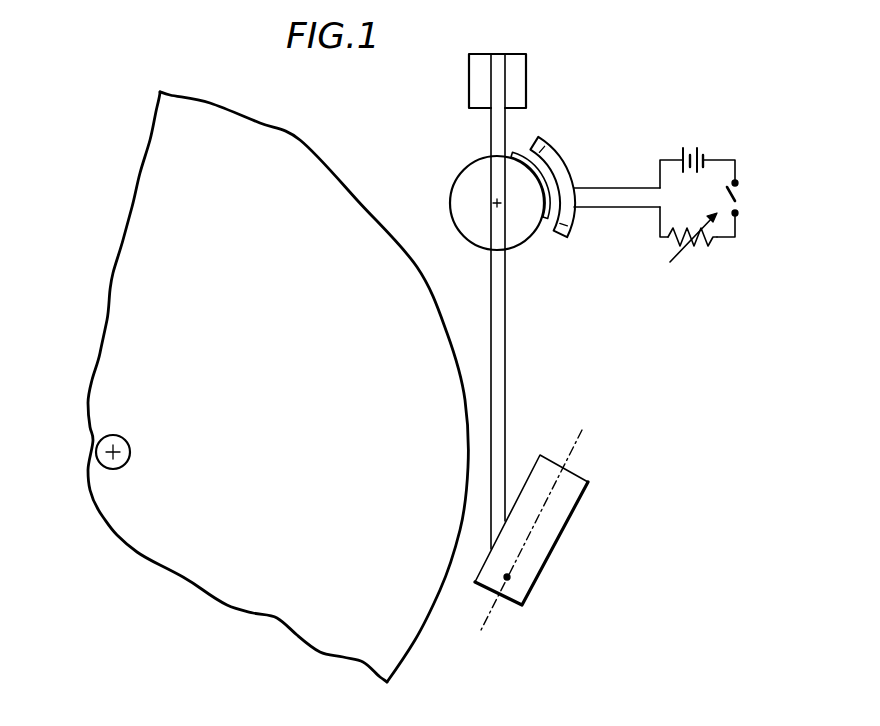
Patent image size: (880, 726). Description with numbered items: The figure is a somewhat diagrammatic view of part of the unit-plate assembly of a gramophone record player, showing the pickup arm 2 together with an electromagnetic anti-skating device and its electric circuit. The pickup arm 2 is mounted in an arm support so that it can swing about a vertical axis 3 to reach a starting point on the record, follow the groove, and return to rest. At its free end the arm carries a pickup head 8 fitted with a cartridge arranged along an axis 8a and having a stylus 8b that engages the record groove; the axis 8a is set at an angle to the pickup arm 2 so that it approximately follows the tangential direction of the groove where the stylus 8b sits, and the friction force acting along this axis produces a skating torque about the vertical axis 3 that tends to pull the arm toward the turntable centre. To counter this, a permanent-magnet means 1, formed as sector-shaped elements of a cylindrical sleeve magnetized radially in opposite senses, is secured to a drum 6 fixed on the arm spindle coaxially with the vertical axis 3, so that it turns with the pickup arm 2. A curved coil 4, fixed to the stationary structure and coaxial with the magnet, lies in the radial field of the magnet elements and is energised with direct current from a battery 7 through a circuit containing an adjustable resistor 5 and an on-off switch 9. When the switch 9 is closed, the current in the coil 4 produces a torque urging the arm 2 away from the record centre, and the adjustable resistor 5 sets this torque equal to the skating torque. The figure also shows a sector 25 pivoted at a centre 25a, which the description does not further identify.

The permanent-magnet means 1 is at (530, 152).
The pickup arm 2 is at (506, 282).
The vertical axis 3 is at (496, 204).
The coil 4 is at (567, 168).
The adjustable resistor 5 is at (697, 250).
The drum 6 is at (465, 166).
The battery 7 is at (694, 142).
The pickup head 8 is at (570, 520).
The axis 8a is at (490, 601).
The stylus 8b is at (507, 577).
The on-off switch 9 is at (737, 200).
The sector 25 is at (200, 104).
The pivot of sector 25a is at (128, 446).